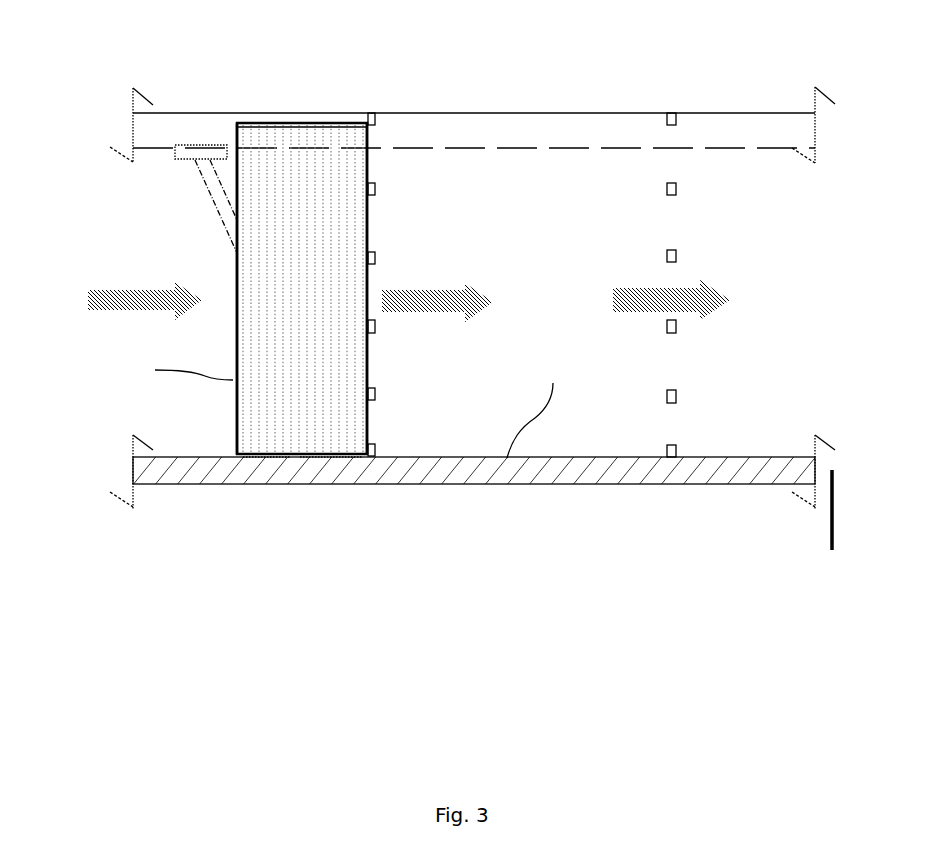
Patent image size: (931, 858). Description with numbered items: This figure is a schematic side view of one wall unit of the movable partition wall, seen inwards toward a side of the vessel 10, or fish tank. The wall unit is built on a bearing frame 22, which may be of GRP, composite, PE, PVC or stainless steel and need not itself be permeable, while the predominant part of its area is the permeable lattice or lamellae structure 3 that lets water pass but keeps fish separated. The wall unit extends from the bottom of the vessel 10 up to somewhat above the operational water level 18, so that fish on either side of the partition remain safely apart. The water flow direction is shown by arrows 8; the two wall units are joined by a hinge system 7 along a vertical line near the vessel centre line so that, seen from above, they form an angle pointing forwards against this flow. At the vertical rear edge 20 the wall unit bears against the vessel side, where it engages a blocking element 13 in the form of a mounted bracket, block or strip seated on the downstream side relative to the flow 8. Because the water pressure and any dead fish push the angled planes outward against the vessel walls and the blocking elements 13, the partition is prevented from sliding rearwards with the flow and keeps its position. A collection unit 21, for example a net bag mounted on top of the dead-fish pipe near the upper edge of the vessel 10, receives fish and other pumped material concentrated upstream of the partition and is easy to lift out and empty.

The lattice or lamellae structure 3 is at (297, 415).
The hinge system 7 is at (232, 278).
The arrow indicating the water flow direction 8 is at (108, 309).
The vessel 10 is at (745, 180).
The blocking elements 13 is at (377, 118).
The indication of operational water level 18 is at (598, 148).
The vertical rear edges 20 is at (367, 425).
The collection unit 21 is at (198, 146).
The frame 22 is at (327, 125).